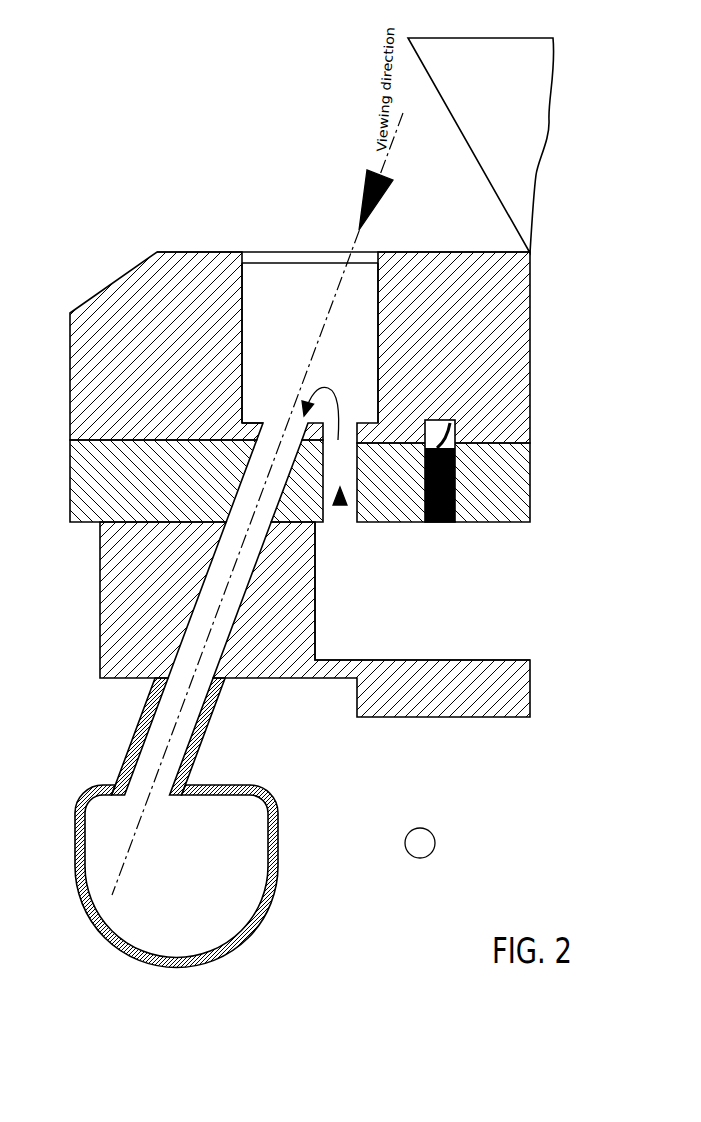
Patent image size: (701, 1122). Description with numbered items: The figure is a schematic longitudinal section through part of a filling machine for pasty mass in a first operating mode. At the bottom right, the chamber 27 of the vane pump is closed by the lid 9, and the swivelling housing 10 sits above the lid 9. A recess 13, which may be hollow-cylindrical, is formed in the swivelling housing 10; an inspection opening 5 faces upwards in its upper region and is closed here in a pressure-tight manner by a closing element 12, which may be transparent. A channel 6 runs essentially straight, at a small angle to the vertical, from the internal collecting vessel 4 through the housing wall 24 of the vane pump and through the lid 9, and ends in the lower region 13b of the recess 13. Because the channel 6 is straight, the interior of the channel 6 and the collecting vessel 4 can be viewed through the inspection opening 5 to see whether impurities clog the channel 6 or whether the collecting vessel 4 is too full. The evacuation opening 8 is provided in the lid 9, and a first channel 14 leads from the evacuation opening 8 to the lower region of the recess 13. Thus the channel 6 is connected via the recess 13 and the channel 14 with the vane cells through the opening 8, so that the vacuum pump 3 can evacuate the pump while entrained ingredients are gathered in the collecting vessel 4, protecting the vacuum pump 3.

The vacuum pump 3 is at (278, 842).
The collecting vessel 4 is at (278, 858).
The inspection opening 5 is at (262, 252).
The channel 6 is at (188, 723).
The evacuation opening 8 is at (340, 505).
The lid 9 is at (528, 494).
The swivelling housing 10 is at (530, 383).
The closing element 12 is at (291, 252).
The recess 13 is at (273, 321).
The lower region of the recess 13b is at (240, 437).
The first channel 14 is at (347, 483).
The housing wall 24 is at (100, 574).
The chamber of the vane pump 27 is at (516, 582).